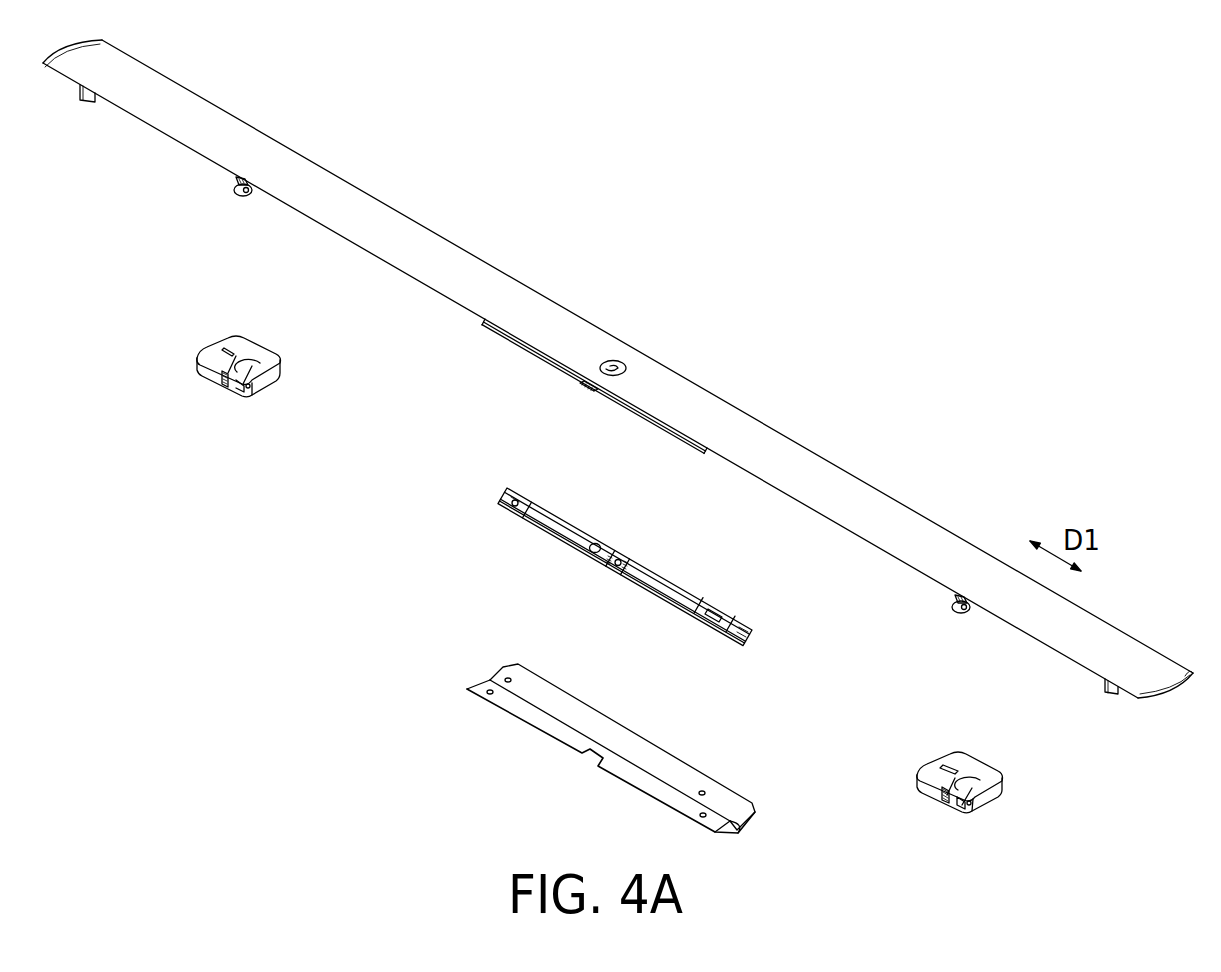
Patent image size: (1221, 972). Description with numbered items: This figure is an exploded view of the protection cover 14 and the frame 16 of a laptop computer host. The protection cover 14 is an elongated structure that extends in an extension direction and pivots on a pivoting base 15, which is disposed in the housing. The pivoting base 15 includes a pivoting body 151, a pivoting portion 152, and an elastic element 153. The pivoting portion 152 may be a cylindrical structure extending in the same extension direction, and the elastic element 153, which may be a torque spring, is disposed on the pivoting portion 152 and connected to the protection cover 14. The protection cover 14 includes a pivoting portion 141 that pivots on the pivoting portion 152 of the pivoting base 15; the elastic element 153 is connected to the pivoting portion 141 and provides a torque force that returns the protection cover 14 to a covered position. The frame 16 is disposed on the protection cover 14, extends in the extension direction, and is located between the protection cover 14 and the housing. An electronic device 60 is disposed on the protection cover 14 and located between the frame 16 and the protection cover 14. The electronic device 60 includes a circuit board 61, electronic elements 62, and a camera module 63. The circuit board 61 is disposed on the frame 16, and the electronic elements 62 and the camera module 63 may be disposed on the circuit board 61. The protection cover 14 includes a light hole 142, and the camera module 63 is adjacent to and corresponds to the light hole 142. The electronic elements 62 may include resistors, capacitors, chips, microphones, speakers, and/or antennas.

The protection cover 14 is at (353, 202).
The pivoting portion 141 is at (233, 193).
The light hole 142 is at (618, 362).
The pivoting base 15 is at (638, 571).
The pivoting body 151 is at (950, 762).
The pivoting portion 152 is at (962, 801).
The elastic element 153 is at (944, 797).
The frame 16 is at (478, 685).
The electronic device 60 is at (601, 539).
The circuit board 61 is at (507, 490).
The electronic elements 62 is at (568, 530).
The camera module 63 is at (621, 535).